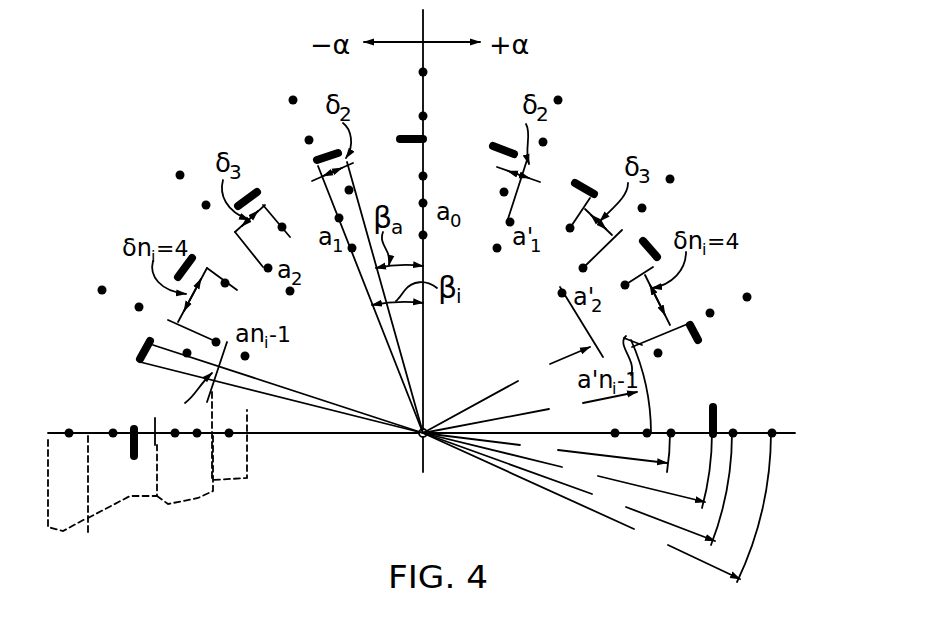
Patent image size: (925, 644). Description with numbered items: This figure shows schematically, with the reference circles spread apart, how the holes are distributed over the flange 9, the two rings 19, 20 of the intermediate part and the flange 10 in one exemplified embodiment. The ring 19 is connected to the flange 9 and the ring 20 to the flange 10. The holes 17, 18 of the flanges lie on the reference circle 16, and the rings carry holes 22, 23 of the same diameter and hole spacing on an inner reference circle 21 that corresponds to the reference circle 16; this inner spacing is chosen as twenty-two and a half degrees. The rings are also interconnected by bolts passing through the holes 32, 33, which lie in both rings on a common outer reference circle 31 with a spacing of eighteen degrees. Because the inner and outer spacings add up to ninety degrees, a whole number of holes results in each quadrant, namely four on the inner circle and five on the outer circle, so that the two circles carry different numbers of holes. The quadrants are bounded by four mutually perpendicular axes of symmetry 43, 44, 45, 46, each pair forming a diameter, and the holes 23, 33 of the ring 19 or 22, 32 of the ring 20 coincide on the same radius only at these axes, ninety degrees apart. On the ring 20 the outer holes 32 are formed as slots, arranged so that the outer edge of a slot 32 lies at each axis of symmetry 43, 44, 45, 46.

The flange 9 is at (240, 485).
The flange 10 is at (88, 536).
The reference circle 16 is at (597, 464).
The hole 17 is at (229, 439).
The hole 18 is at (69, 438).
The ring 19 is at (187, 500).
The ring 20 is at (130, 496).
The inner reference circle 21 is at (577, 442).
The hole 22 is at (113, 429).
The hole 23 is at (197, 439).
The outer reference circle 31 is at (567, 470).
The slot 32 is at (133, 452).
The hole 33 is at (175, 429).
The axis of symmetry 43 is at (427, 25).
The axis of symmetry 44 is at (781, 433).
The axis of symmetry 45 is at (418, 449).
The axis of symmetry 46 is at (57, 430).